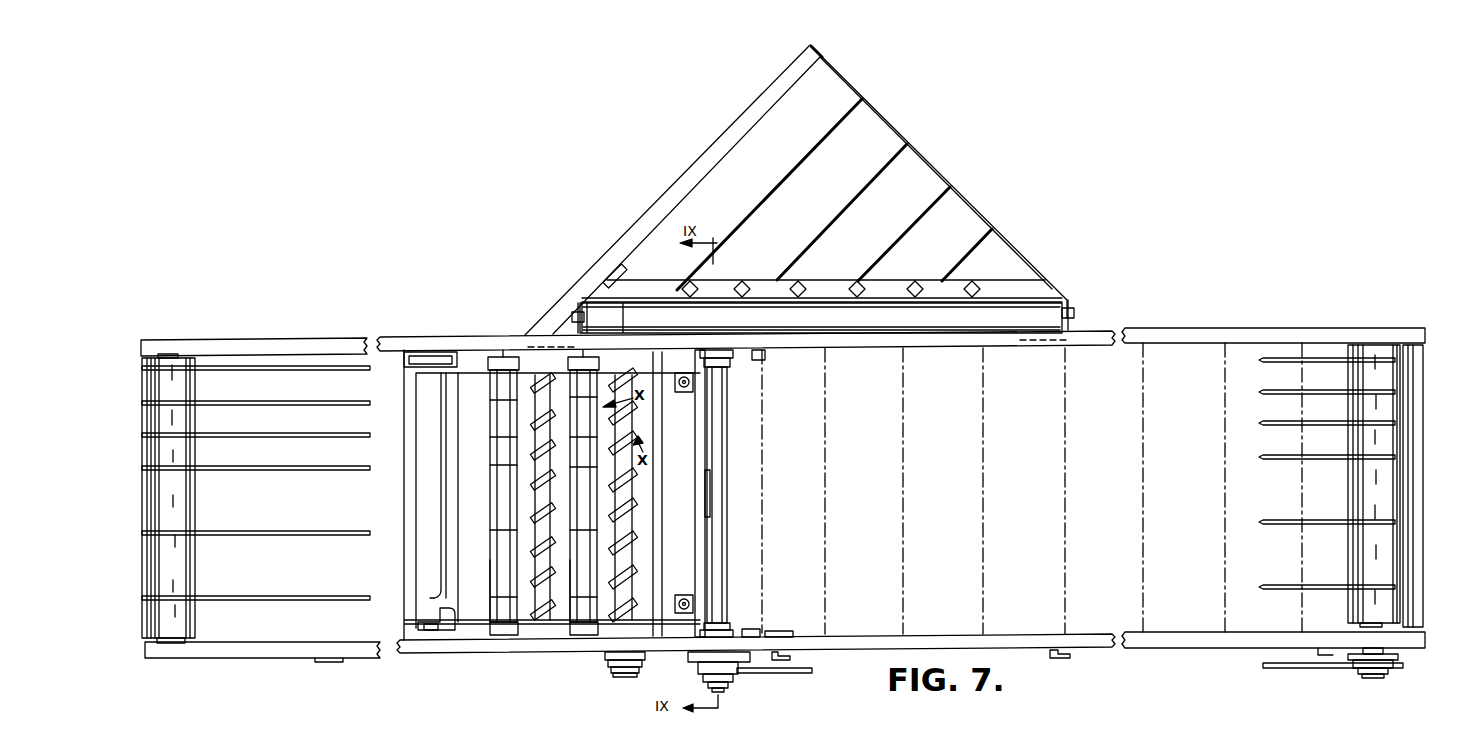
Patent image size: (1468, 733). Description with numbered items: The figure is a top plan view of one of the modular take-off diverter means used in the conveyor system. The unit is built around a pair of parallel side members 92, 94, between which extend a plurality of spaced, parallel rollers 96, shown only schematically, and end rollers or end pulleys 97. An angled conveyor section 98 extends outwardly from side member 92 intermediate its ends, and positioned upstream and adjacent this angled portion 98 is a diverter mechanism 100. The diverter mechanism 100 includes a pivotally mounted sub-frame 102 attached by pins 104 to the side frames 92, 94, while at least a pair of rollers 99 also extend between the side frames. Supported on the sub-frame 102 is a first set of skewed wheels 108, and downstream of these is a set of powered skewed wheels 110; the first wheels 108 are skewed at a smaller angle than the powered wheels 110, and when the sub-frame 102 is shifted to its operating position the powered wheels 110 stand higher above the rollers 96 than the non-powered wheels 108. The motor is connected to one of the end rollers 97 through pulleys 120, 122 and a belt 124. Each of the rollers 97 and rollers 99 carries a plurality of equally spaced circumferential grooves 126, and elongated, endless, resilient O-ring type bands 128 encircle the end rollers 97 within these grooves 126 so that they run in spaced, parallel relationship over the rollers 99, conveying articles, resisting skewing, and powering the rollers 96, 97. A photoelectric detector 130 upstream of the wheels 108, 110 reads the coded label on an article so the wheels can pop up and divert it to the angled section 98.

The side member 92 is at (290, 344).
The side member 94 is at (297, 645).
The rollers 96 is at (1235, 380).
The end rollers 97 is at (185, 573).
The angled conveyor section 98 is at (682, 177).
The rollers 99 is at (505, 578).
The diverter mechanism 100 is at (554, 336).
The sub-frame 102 is at (677, 541).
The pins 104 is at (452, 632).
The first set of skewed wheels 108 is at (547, 540).
The powered skewed wheels 110 is at (625, 421).
The pulley 120 is at (749, 732).
The pulley 122 is at (1368, 732).
The belt 124 is at (1140, 732).
The circumferential grooves 126 is at (491, 431).
The O-ring type bands 128 is at (316, 398).
The photoelectric detector 130 is at (330, 662).